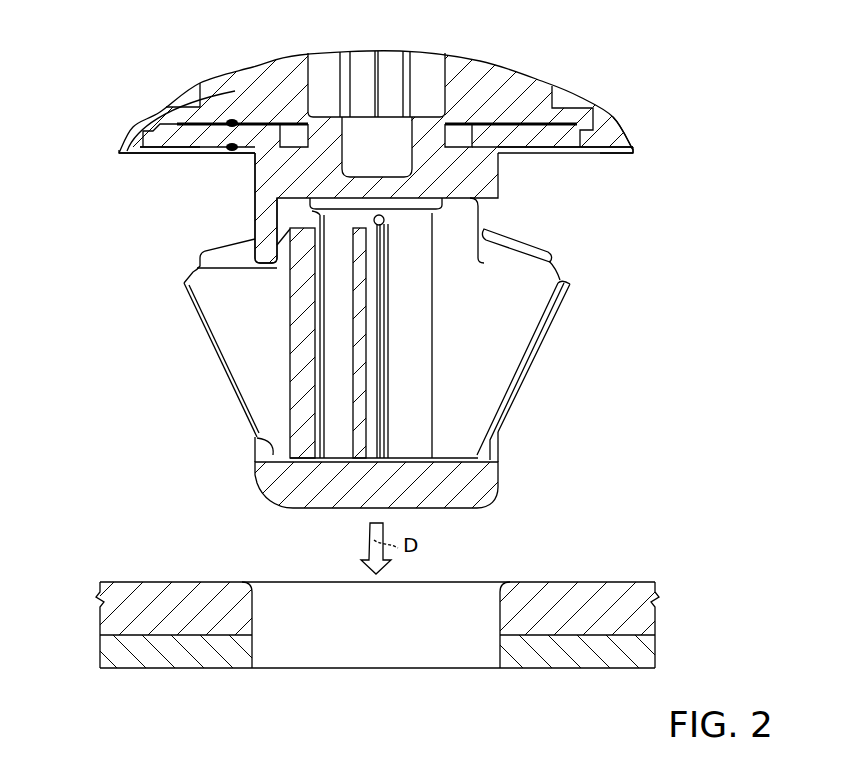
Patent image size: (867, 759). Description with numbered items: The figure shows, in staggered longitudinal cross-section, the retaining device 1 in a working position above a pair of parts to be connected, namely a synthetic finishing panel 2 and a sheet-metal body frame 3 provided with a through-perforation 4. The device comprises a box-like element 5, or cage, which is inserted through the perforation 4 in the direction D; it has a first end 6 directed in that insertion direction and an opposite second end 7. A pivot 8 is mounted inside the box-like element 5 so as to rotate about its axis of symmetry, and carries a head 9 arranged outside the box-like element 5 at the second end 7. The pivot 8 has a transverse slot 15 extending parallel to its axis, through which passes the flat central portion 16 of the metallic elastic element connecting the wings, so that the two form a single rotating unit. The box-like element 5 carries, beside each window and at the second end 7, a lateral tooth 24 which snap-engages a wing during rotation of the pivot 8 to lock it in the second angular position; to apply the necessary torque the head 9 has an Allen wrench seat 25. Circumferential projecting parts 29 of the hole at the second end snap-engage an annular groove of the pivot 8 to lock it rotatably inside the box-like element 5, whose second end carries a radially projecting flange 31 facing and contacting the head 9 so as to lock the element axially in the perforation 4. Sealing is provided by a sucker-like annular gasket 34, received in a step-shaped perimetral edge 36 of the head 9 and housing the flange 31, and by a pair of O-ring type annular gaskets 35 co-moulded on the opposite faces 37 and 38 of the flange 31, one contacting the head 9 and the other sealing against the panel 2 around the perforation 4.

The retaining device 1 is at (412, 272).
The synthetic finishing panel 2 is at (603, 593).
The sheet-metal body frame 3 is at (633, 652).
The through-perforation 4 is at (266, 618).
The box-like element 5 is at (487, 167).
The first end 6 is at (485, 492).
The second end 7 is at (496, 108).
The pivot 8 is at (273, 240).
The head 9 is at (244, 88).
The transverse slot 15 is at (372, 234).
The flat central portion 16 is at (372, 345).
The lateral tooth 24 is at (197, 268).
The Allen wrench seat 25 is at (330, 72).
The circumferential projecting parts 29 is at (402, 222).
The radially projecting flange 31 is at (188, 142).
The sucker-like annular gasket 34 is at (620, 115).
The annular gaskets 35 is at (168, 118).
The step-shaped perimetral edge 36 is at (578, 107).
The face 37 is at (523, 118).
The face 38 is at (553, 155).